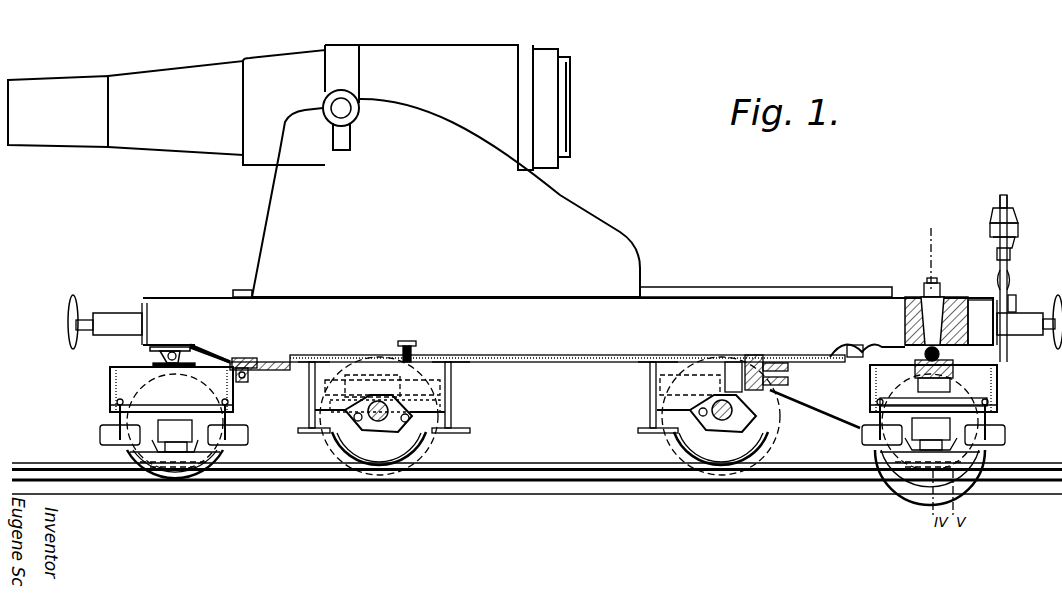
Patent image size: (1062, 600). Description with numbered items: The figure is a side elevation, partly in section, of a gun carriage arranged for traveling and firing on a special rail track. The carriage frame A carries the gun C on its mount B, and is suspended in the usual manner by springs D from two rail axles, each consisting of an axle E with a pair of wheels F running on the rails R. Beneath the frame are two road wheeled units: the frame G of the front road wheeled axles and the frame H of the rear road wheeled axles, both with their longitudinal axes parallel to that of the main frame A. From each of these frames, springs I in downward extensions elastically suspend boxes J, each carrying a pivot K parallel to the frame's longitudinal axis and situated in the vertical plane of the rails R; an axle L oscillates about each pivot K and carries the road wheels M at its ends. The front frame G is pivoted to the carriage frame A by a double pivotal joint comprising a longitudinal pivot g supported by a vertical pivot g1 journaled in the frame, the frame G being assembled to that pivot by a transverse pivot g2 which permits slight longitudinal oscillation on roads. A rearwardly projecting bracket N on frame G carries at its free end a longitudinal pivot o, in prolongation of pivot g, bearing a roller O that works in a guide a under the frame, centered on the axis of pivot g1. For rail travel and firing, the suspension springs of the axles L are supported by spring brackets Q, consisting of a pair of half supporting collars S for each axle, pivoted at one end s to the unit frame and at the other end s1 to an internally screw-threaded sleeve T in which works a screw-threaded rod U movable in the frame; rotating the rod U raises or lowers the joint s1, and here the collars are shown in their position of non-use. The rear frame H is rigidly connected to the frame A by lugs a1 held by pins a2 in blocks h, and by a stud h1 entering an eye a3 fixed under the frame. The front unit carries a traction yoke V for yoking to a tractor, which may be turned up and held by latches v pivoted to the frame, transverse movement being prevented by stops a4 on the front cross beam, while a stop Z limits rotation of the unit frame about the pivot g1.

The carriage frame A is at (177, 312).
The gun mount B is at (564, 221).
The gun C is at (222, 143).
The springs D is at (350, 380).
The axle E is at (378, 413).
The wheels F is at (418, 445).
The frame of the front road wheeled axles G is at (997, 405).
The frame of the rear road wheeled axles H is at (110, 383).
The springs I is at (147, 408).
The boxes J is at (170, 450).
The pivot K is at (185, 423).
The axle L is at (176, 430).
The road wheels M is at (183, 452).
The bracket N is at (835, 402).
The roller O is at (763, 362).
The longitudinal pivot o is at (777, 362).
The spring brackets Q is at (118, 448).
The rails R is at (544, 462).
The half supporting collars S is at (367, 430).
The pivot s is at (343, 440).
The joint s1 is at (407, 425).
The internally screw-threaded sleeve T is at (407, 400).
The screw-threaded rod U is at (415, 357).
The traction yoke V is at (1006, 290).
The latches v is at (1016, 300).
The stop Z is at (852, 342).
The guide a is at (748, 365).
The lugs a1 is at (152, 348).
The pins a2 is at (178, 351).
The eye a3 is at (249, 377).
The stops a4 is at (995, 317).
The pivot g is at (950, 377).
The vertical pivot g1 is at (930, 310).
The transverse pivot g2 is at (943, 357).
The blocks h is at (213, 352).
The stud h1 is at (248, 358).